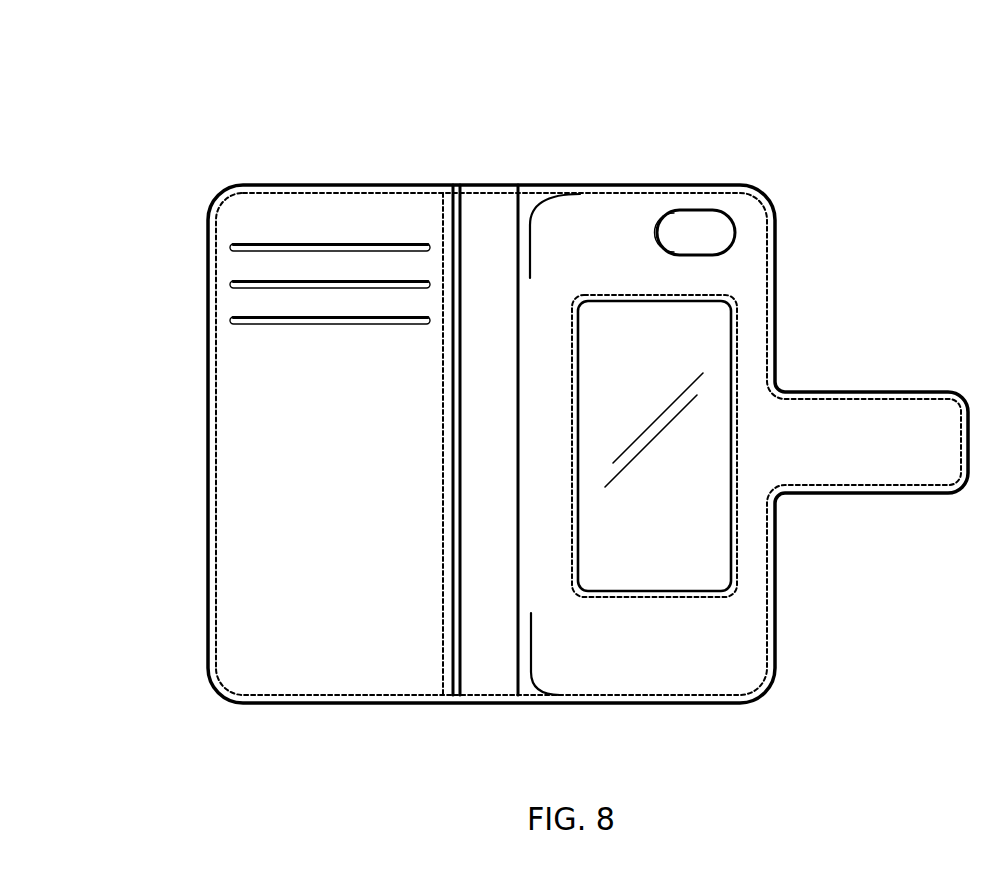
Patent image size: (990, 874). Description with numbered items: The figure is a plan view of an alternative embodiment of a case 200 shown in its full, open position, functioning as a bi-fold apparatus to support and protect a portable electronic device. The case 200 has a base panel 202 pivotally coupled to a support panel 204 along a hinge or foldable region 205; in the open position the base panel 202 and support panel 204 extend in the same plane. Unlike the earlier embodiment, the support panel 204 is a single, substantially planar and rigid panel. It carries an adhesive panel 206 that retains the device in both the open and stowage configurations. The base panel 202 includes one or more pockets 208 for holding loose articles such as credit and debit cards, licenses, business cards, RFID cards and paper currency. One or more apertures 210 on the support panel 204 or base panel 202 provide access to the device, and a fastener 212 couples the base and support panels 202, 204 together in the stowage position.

The case 200 is at (150, 135).
The base panel 202 is at (287, 703).
The support panel 204 is at (658, 703).
The hinge or foldable region 205 is at (505, 175).
The adhesive panel 206 is at (683, 505).
The pockets 208 is at (392, 318).
The apertures 210 is at (698, 228).
The fastener 212 is at (878, 454).